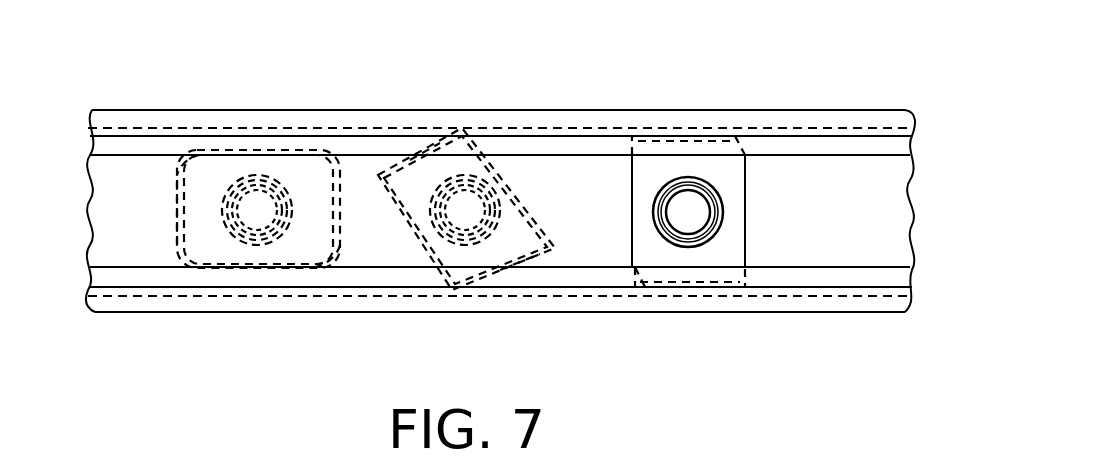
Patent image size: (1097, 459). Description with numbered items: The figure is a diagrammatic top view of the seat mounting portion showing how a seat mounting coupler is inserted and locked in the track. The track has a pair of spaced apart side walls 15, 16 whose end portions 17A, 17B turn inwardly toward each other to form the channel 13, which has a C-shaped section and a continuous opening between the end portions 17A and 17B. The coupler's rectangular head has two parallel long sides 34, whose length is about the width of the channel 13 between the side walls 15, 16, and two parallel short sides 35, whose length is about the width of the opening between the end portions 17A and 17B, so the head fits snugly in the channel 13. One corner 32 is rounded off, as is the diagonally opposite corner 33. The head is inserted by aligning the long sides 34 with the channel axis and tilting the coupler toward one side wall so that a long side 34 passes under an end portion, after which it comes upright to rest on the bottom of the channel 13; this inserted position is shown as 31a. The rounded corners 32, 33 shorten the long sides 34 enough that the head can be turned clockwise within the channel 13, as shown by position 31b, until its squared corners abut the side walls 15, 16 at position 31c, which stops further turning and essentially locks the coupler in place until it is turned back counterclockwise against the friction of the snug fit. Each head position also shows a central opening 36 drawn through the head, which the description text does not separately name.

The channel 13 is at (549, 168).
The side wall 15 is at (256, 110).
The side wall 16 is at (237, 312).
The end portion 17A is at (872, 150).
The end portion 17B is at (852, 278).
The head member position (inserted) 31a is at (278, 165).
The head member position (turning) 31b is at (456, 148).
The head member position (locked) 31c is at (655, 168).
The rounded corner 32 is at (323, 255).
The rounded corner 33 is at (195, 163).
The long side 34 is at (630, 182).
The short side 35 is at (177, 200).
The grommet / opening 36 is at (692, 220).